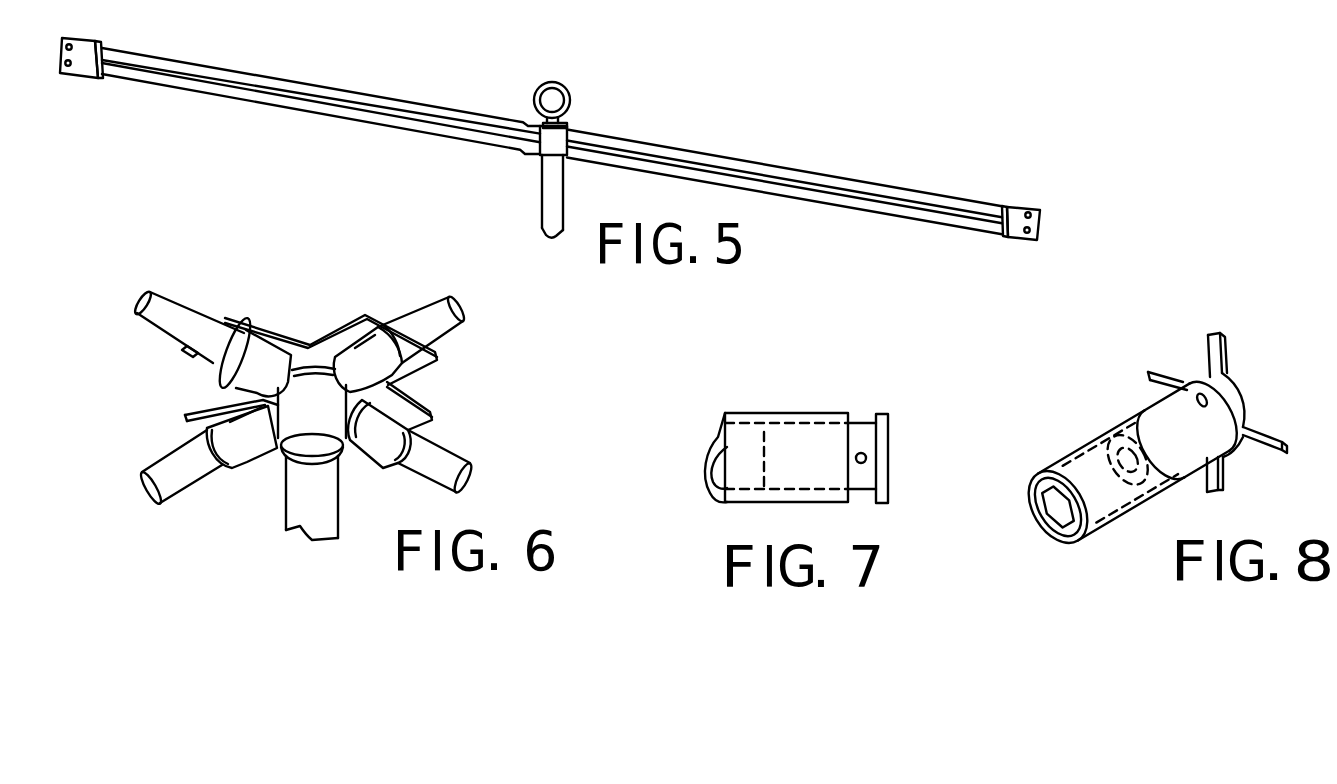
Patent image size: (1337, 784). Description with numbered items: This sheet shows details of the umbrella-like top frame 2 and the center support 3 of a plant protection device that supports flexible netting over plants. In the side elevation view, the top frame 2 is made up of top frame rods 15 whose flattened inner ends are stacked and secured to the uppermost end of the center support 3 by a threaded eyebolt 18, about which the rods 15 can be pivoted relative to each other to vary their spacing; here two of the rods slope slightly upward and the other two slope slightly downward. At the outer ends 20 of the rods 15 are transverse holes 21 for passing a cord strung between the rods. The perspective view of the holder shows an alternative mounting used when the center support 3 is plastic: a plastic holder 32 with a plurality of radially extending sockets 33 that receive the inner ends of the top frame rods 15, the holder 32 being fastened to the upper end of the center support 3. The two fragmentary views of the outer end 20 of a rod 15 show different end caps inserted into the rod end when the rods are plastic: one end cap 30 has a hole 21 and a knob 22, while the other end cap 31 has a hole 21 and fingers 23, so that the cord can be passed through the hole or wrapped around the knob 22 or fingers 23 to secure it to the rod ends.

In FIG. 5, the top frame 2 is at (768, 148).
In FIG. 5, the center support 3 is at (528, 203).
In FIG. 6, the center support 3 is at (272, 504).
In FIG. 5, the top frame rods 15 is at (334, 89).
In FIG. 6, the top frame rods 15 is at (163, 328).
In FIG. 7, the top frame rods 15 is at (725, 418).
In FIG. 8, the top frame rods 15 is at (1093, 535).
In FIG. 5, the threaded eyebolt 18 is at (546, 85).
In FIG. 5, the outer ends 20 is at (1015, 204).
In FIG. 7, the outer ends 20 is at (806, 420).
In FIG. 8, the outer ends 20 is at (1140, 413).
In FIG. 7, the transverse holes 21 is at (861, 452).
In FIG. 8, the transverse holes 21 is at (1201, 395).
In FIG. 7, the knobs 22 is at (888, 428).
In FIG. 8, the fingers 23 is at (1278, 436).
In FIG. 7, the end cap 30 is at (861, 490).
In FIG. 8, the end cap 31 is at (1205, 436).
In FIG. 6, the plastic holder 32 is at (313, 340).
In FIG. 6, the radially extending sockets 33 is at (253, 346).